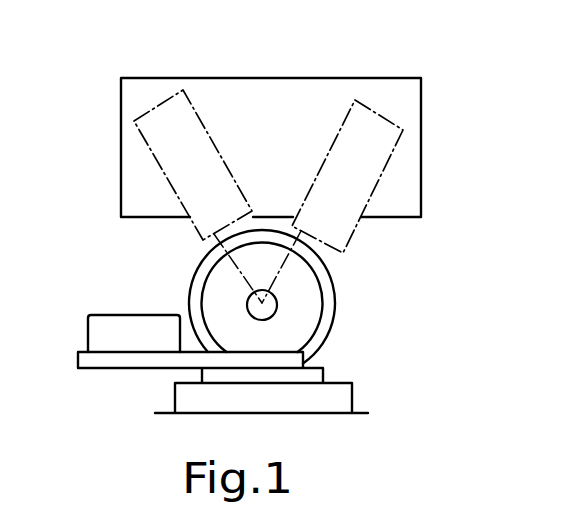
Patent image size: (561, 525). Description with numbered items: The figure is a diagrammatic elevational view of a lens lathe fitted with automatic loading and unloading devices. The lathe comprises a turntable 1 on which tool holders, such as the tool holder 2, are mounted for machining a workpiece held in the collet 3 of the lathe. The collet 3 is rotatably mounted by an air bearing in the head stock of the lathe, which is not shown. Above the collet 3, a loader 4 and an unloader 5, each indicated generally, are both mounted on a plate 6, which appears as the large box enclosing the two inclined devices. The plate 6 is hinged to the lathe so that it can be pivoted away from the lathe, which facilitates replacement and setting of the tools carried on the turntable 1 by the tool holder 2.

The turntable 1 is at (345, 398).
The tool holder 2 is at (103, 318).
The collet 3 is at (277, 305).
The loader 4 is at (148, 150).
The unloader 5 is at (397, 142).
The plate 6 is at (330, 77).